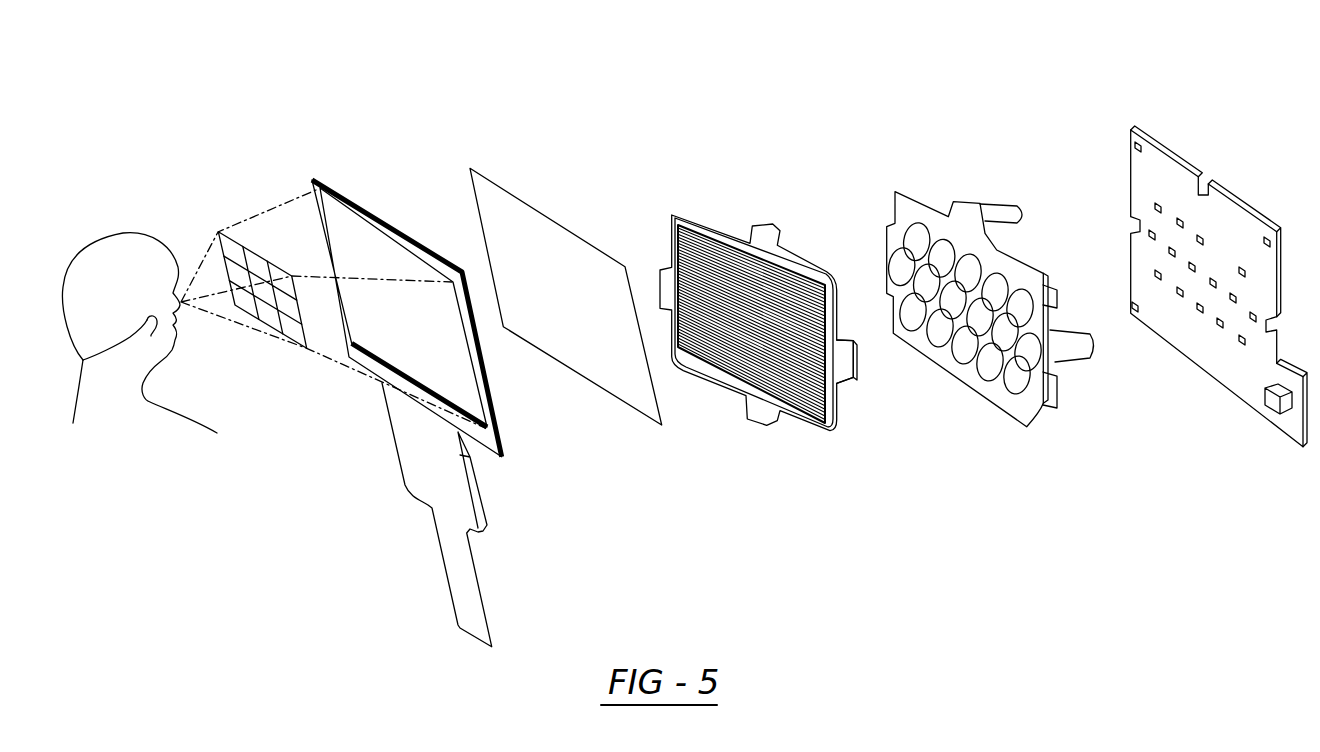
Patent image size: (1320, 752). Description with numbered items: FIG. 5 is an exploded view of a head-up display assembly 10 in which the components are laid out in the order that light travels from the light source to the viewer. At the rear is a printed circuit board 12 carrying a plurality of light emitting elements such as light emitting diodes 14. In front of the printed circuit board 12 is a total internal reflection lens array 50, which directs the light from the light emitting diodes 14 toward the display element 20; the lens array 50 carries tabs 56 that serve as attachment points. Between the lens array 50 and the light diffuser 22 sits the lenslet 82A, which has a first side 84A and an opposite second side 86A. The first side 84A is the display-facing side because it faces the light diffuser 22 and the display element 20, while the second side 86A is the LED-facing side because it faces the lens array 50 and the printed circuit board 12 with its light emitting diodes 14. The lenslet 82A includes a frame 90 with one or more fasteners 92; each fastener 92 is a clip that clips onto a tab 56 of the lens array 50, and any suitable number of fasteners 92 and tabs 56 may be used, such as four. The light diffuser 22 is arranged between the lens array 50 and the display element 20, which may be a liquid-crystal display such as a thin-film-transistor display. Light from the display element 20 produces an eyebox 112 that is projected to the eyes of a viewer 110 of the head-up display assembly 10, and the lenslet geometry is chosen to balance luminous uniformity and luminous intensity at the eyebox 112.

The head-up display assembly 10 is at (440, 79).
The printed circuit board 12 is at (1160, 177).
The light emitting diodes 14 is at (1218, 255).
The display element 20 is at (385, 233).
The light diffuser 22 is at (532, 227).
The total internal reflection lens array 50 is at (894, 192).
The tab 56 is at (968, 215).
The lenslet 82A is at (725, 290).
The first side 84A is at (765, 353).
The second side 86A is at (840, 407).
The frame 90 is at (676, 216).
The fastener 92 is at (857, 358).
The viewer 110 is at (112, 230).
The eyebox 112 is at (292, 330).